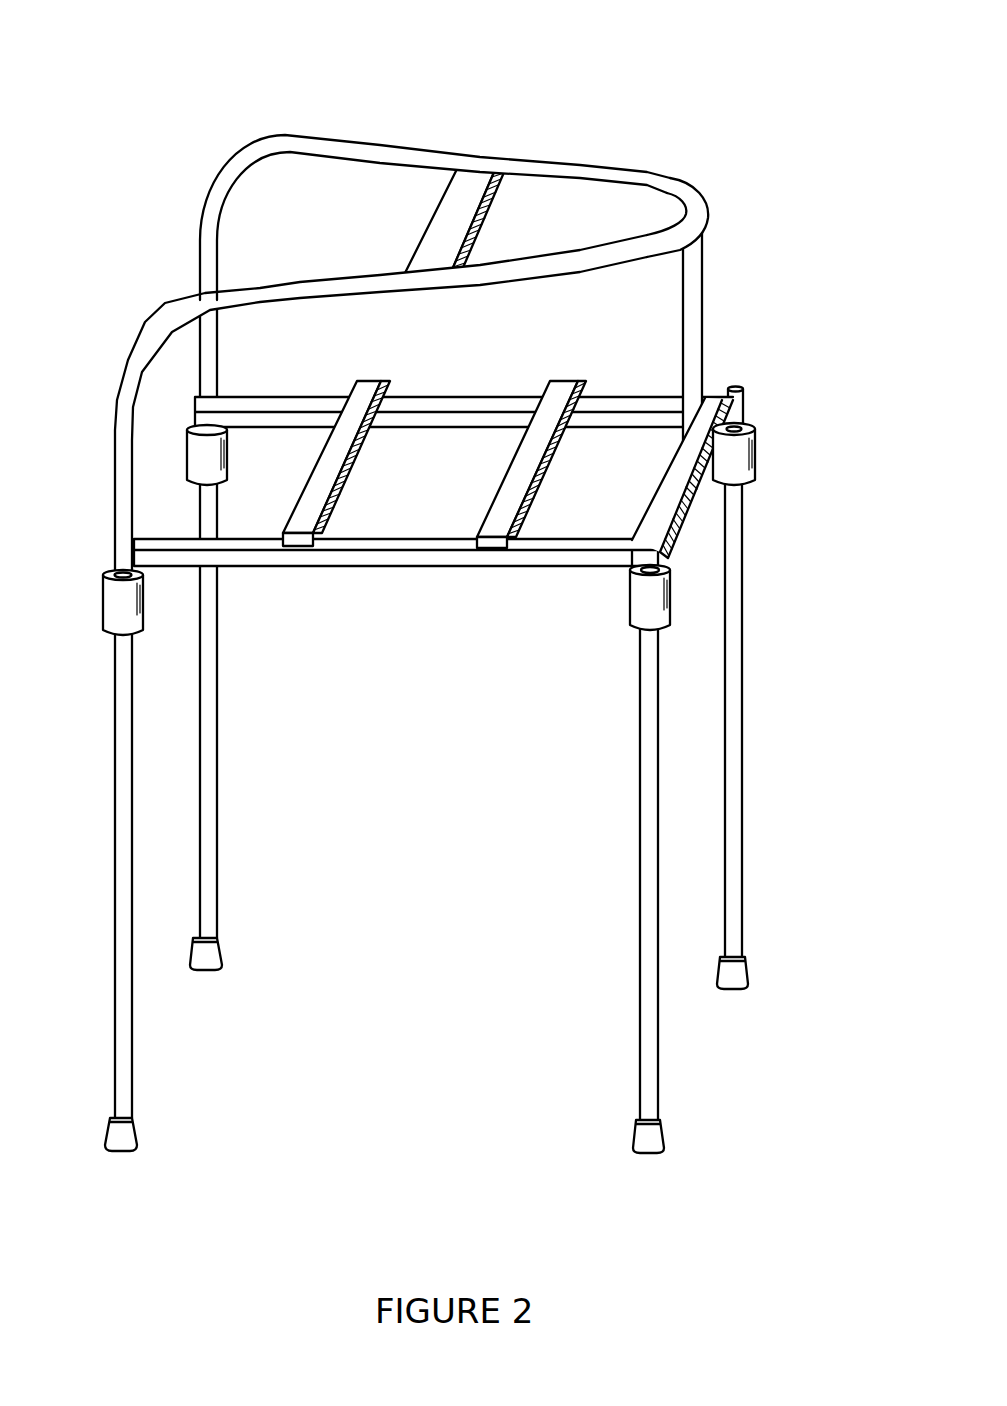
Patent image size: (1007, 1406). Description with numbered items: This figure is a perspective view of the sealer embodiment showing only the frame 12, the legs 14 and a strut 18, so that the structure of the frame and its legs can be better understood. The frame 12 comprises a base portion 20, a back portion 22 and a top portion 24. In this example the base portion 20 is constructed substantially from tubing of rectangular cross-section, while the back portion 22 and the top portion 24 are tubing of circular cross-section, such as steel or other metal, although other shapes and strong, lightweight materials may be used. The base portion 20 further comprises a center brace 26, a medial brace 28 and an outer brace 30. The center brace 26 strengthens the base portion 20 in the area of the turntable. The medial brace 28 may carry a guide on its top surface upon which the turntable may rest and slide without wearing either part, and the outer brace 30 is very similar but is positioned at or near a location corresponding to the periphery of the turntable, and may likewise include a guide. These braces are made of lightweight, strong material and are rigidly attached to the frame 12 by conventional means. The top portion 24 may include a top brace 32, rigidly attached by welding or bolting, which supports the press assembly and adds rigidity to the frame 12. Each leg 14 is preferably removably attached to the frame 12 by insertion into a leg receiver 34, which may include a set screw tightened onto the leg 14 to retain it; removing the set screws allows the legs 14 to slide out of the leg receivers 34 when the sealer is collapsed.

The frame 12 is at (686, 190).
The legs 14 is at (735, 690).
The strut 18 is at (697, 327).
The base portion 20 is at (341, 557).
The back portion 22 is at (122, 445).
The top portion 24 is at (382, 147).
The center brace 26 is at (703, 487).
The medial brace 28 is at (543, 442).
The outer brace 30 is at (363, 400).
The top brace 32 is at (460, 197).
The leg receiver 34 is at (753, 460).